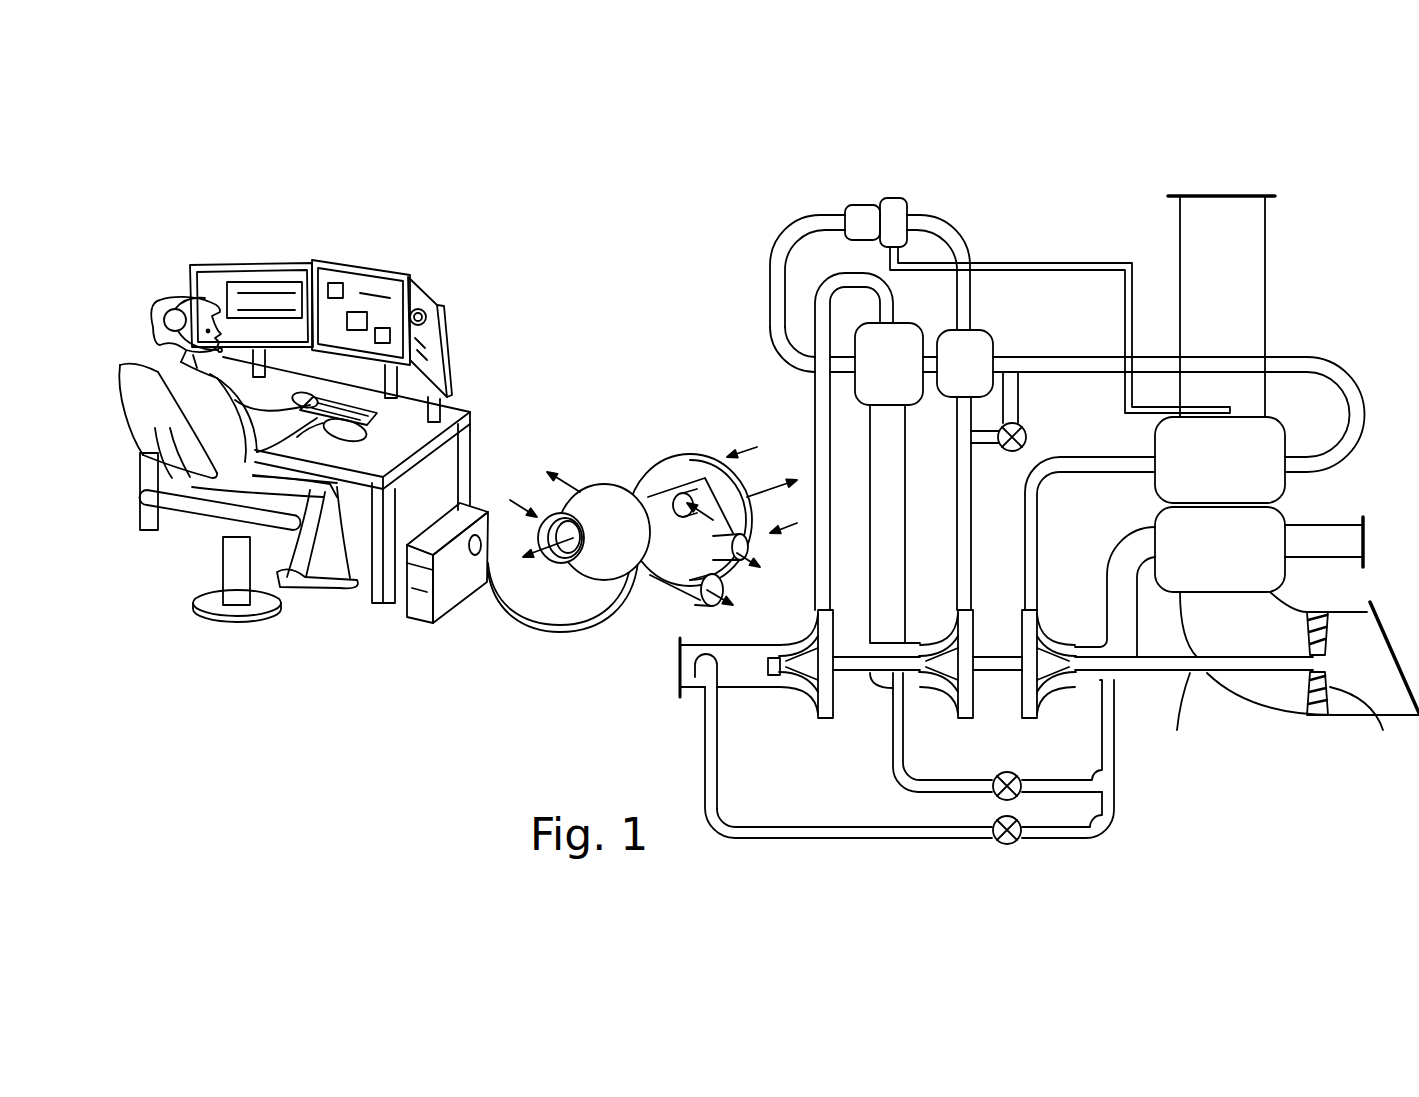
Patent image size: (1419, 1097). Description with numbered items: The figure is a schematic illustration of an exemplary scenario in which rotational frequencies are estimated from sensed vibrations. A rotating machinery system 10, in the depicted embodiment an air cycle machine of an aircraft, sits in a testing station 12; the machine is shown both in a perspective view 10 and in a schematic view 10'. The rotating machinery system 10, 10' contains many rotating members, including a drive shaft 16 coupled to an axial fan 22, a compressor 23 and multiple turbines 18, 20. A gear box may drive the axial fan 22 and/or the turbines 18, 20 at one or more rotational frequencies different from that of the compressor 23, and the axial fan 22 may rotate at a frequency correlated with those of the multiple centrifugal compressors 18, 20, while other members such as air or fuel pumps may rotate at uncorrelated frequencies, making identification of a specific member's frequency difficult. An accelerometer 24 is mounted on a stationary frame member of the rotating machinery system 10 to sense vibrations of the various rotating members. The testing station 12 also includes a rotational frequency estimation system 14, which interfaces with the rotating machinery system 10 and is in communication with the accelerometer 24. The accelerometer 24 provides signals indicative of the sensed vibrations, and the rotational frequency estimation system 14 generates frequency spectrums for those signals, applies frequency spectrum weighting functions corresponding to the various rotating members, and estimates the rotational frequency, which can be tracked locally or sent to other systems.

The rotating machinery system 10 is at (653, 477).
The rotating machinery system (schematic view) 10' is at (1049, 485).
The testing station 12 is at (553, 308).
The rotational frequency estimation system 14 is at (476, 617).
The drive shaft 16 is at (1190, 690).
The turbine 18 is at (800, 697).
The turbine 20 is at (945, 700).
The axial fan 22 is at (1338, 688).
The compressor 23 is at (1058, 640).
The accelerometer 24 is at (632, 543).